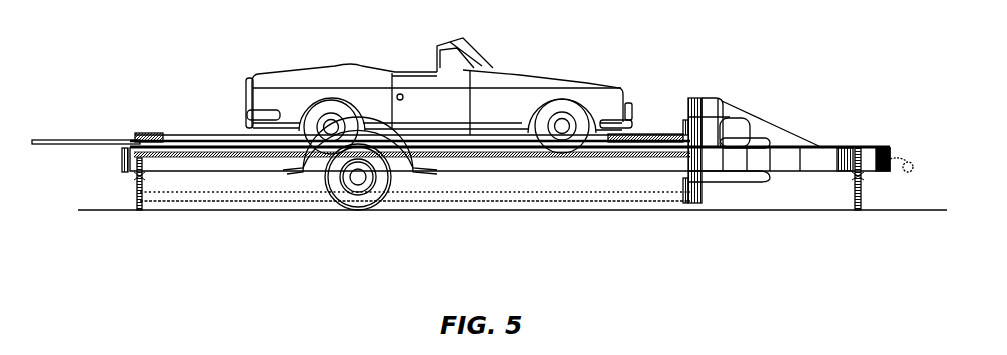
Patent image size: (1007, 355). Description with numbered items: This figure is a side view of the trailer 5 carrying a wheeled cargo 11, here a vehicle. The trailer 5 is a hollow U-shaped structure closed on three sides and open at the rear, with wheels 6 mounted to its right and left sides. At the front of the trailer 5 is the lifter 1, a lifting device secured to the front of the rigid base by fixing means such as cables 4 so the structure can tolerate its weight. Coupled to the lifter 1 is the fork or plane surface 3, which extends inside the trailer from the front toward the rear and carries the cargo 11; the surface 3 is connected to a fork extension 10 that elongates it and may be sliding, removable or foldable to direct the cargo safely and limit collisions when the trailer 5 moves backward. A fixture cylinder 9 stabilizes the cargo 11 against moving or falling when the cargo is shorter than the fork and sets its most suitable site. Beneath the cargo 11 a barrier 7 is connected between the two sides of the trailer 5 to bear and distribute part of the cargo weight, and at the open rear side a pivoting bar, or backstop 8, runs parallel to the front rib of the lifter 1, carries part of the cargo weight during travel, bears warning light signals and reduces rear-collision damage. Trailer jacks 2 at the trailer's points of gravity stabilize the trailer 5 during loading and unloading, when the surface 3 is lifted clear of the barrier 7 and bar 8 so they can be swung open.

The lifter 1 is at (712, 97).
The trailer jack 2 is at (133, 182).
The fork 3 is at (247, 136).
The cables 4 is at (782, 127).
The trailer 5 is at (227, 168).
The wheels 6 is at (345, 203).
The barrier 7 is at (208, 158).
The bar (backstop) 8 is at (122, 155).
The fixture cylinder 9 is at (147, 137).
The fork extension 10 is at (78, 139).
The cargo 11 is at (292, 73).